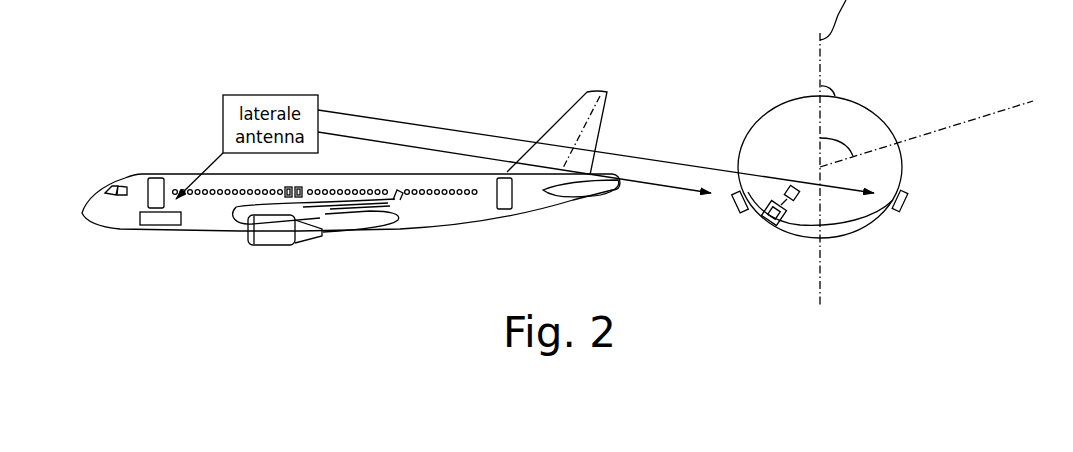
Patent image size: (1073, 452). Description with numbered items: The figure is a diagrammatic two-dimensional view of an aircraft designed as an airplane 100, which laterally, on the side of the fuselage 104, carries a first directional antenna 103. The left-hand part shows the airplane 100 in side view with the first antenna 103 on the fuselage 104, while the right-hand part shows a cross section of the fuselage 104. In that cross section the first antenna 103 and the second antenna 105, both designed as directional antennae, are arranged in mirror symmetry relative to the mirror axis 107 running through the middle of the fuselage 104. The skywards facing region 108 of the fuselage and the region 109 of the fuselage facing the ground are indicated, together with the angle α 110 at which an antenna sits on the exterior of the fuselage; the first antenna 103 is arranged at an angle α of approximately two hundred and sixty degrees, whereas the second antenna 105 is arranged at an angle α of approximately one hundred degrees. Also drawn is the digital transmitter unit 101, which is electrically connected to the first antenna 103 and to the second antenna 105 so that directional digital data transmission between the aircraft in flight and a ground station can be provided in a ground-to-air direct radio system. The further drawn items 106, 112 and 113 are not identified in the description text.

The airplane 100 is at (157, 118).
The digital transmitter unit 101 is at (762, 216).
The first directional antenna 103 is at (150, 228).
The fuselage 104 is at (229, 232).
The second antenna 105 is at (906, 205).
The tilted axis 106 is at (981, 76).
The mirror axis 107 is at (822, 282).
The skywards facing region 108 is at (837, 97).
The region facing the ground 109 is at (868, 228).
The angle α 110 is at (846, 136).
The satellite antenna 112 is at (773, 192).
The satellite inner element 113 is at (771, 222).